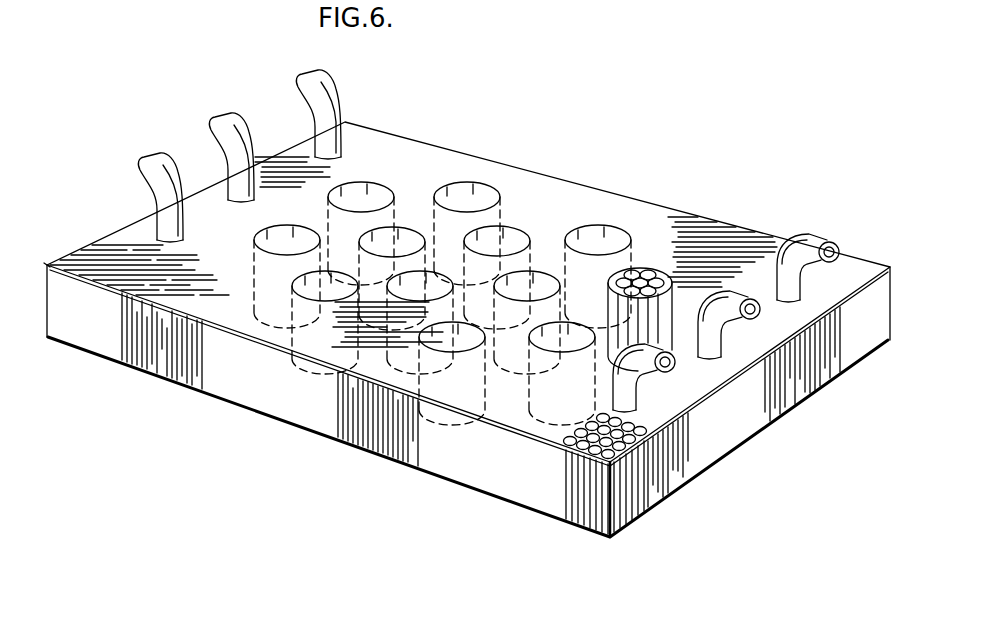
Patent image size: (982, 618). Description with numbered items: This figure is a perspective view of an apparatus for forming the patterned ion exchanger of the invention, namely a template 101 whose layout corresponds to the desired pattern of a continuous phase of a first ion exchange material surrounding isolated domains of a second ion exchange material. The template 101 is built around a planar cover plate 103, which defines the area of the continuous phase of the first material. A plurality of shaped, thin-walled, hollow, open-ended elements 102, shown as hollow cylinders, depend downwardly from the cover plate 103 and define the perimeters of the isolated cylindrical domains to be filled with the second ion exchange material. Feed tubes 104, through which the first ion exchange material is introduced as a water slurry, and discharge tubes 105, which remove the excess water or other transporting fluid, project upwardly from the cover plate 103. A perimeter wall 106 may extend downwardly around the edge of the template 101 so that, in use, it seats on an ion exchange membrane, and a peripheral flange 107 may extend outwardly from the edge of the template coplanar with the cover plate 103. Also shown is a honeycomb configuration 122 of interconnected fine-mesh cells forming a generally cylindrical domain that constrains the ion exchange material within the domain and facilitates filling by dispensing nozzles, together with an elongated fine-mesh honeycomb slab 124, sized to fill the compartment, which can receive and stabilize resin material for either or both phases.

The template 101 is at (490, 150).
The hollow open-ended elements 102 is at (602, 228).
The cover plate 103 is at (458, 260).
The feed tubes 104 is at (788, 240).
The discharge tubes 105 is at (286, 87).
The perimeter wall 106 is at (639, 488).
The peripheral flange 107 is at (47, 264).
The honeycomb configuration 122 is at (656, 269).
The fine-mesh honeycomb slab 124 is at (563, 511).